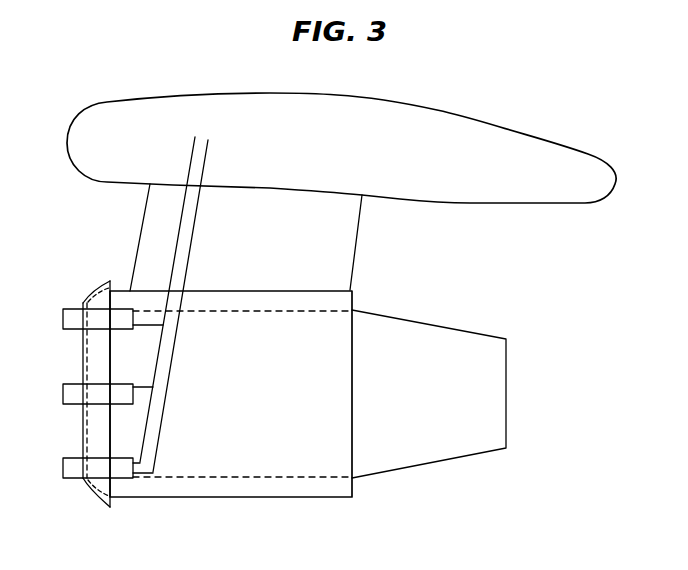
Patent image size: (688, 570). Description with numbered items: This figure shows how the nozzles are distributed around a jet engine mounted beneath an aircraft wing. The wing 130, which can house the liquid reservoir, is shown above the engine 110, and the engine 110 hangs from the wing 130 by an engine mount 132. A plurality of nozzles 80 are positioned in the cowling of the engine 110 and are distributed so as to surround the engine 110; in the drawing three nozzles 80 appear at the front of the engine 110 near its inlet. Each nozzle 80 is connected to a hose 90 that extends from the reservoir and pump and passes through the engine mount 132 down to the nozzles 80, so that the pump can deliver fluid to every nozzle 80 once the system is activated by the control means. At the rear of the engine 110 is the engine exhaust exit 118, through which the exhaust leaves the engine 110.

The wing 130 is at (440, 111).
The engine mount 132 is at (358, 229).
The hose 90 is at (177, 232).
The engine 110 is at (405, 307).
The nozzle 80 is at (72, 309).
The engine exhaust exit 118 is at (508, 390).